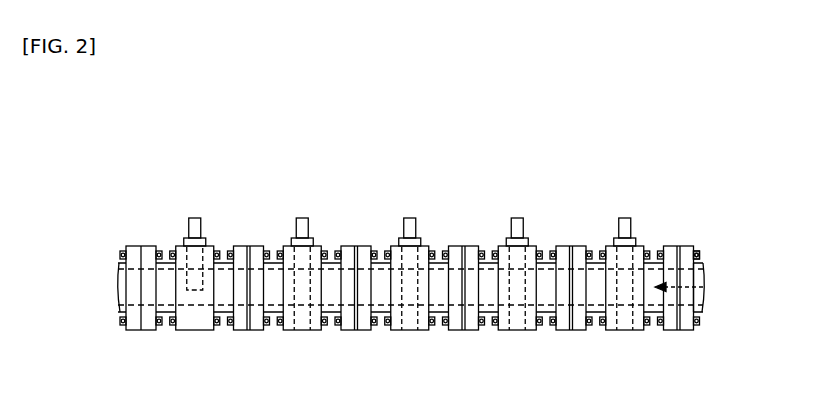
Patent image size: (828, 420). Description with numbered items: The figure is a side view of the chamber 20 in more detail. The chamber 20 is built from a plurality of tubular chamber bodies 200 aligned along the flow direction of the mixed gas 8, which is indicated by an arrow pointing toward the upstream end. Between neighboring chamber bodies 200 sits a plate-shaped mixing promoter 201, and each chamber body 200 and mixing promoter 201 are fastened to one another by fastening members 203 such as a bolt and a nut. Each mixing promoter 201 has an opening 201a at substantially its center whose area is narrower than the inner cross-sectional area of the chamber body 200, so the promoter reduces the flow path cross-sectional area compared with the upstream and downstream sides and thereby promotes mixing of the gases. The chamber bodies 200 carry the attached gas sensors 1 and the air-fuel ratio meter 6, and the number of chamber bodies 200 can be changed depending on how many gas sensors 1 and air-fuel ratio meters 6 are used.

The gas sensor 1 is at (302, 216).
The air-fuel ratio meter 6 is at (193, 216).
The mixed gas 8 is at (685, 291).
The chamber 20 is at (680, 342).
The chamber body 200 is at (207, 243).
The mixing promoter 201 is at (246, 246).
The opening 201a is at (706, 302).
The fastening member 203 is at (702, 252).